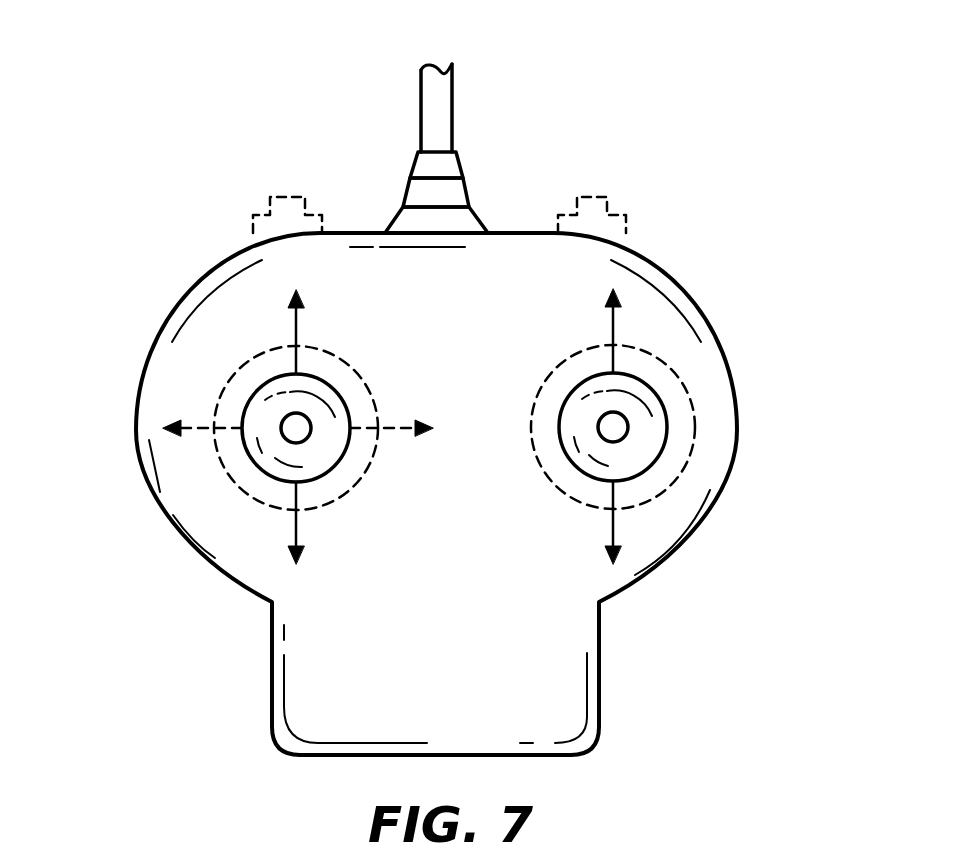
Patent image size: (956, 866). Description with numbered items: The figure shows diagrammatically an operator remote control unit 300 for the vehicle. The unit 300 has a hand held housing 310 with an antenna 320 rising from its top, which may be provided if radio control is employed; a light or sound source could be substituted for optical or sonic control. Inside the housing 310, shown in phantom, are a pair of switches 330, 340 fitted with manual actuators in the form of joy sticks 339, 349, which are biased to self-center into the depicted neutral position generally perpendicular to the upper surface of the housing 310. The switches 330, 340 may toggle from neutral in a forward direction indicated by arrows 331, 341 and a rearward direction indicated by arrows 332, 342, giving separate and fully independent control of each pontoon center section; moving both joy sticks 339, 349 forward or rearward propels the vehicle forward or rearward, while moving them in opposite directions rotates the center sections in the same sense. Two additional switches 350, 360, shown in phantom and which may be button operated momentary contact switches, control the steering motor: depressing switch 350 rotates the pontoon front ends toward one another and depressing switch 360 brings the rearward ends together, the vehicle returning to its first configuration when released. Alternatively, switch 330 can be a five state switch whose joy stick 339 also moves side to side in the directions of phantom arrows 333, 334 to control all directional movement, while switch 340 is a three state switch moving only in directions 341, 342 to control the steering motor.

The operator remote control unit 300 is at (707, 76).
The hand held housing 310 is at (692, 285).
The antenna 320 is at (420, 113).
The switch 330 is at (362, 370).
The forward direction arrow 331 is at (297, 318).
The rearward direction arrow 332 is at (296, 528).
The side direction phantom arrow 333 is at (195, 425).
The side direction phantom arrow 334 is at (400, 420).
The joy stick 339 is at (292, 439).
The switch 340 is at (536, 466).
The forward direction arrow 341 is at (612, 318).
The rearward direction arrow 342 is at (613, 528).
The joy stick 349 is at (621, 434).
The switch 350 is at (284, 196).
The switch 360 is at (592, 196).